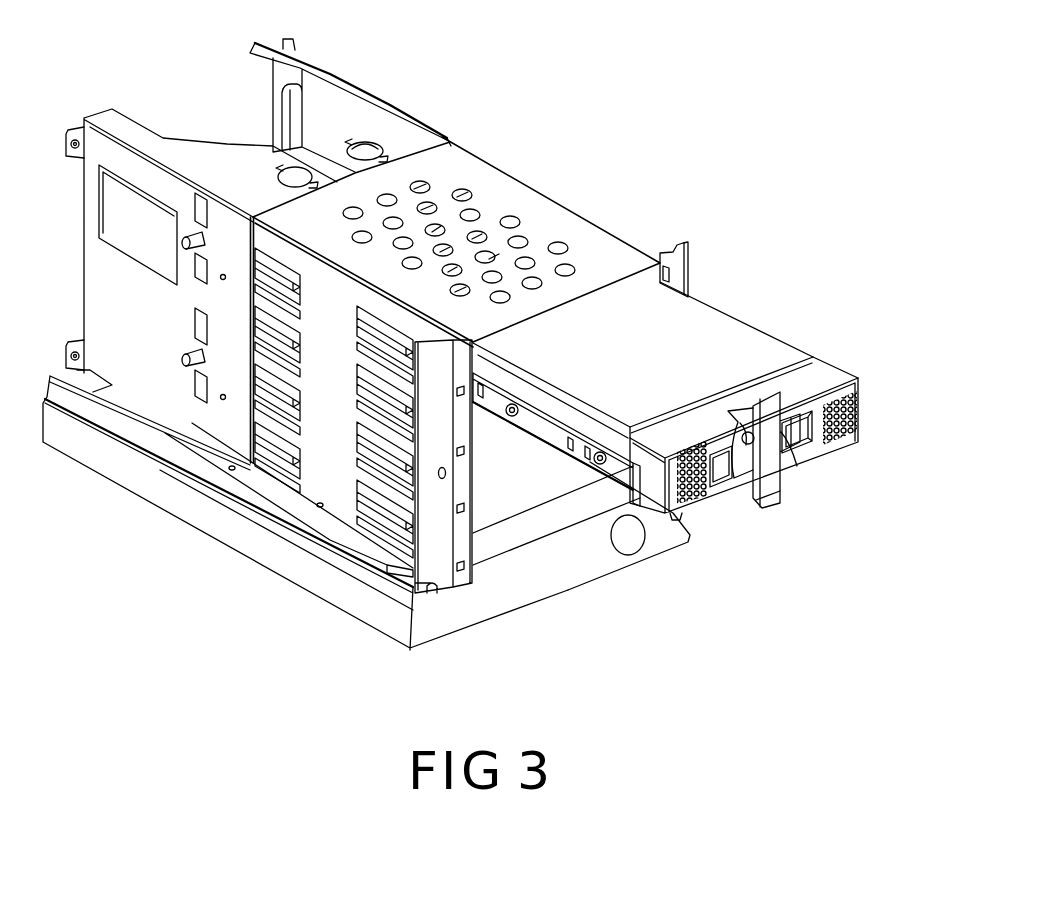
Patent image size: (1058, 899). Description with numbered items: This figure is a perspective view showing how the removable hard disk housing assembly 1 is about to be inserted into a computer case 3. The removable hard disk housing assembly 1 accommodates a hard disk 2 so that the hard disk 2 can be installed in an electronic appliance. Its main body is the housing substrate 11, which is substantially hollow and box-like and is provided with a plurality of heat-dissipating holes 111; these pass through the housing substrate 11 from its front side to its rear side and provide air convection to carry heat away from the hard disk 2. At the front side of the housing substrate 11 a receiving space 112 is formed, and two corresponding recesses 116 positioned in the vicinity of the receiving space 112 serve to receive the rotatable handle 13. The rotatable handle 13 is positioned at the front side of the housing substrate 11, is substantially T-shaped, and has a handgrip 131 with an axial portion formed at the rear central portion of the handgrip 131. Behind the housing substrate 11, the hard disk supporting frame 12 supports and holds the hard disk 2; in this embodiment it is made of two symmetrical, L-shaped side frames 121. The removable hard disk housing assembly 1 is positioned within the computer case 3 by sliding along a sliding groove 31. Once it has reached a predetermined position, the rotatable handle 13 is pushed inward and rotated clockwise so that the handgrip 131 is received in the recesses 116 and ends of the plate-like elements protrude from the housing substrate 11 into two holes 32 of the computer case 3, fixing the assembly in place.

The removable hard disk housing assembly 1 is at (838, 482).
The hard disk 2 is at (720, 309).
The computer case 3 is at (426, 107).
The housing substrate 11 is at (850, 363).
The hard disk supporting frame 12 is at (548, 460).
The rotatable handle 13 is at (789, 500).
The sliding groove 31 is at (368, 348).
The holes 32 is at (458, 389).
The heat-dissipating holes 111 is at (707, 505).
The receiving space 112 is at (738, 480).
The recesses 116 is at (808, 449).
The side frames 121 is at (537, 421).
The handgrip 131 is at (770, 492).